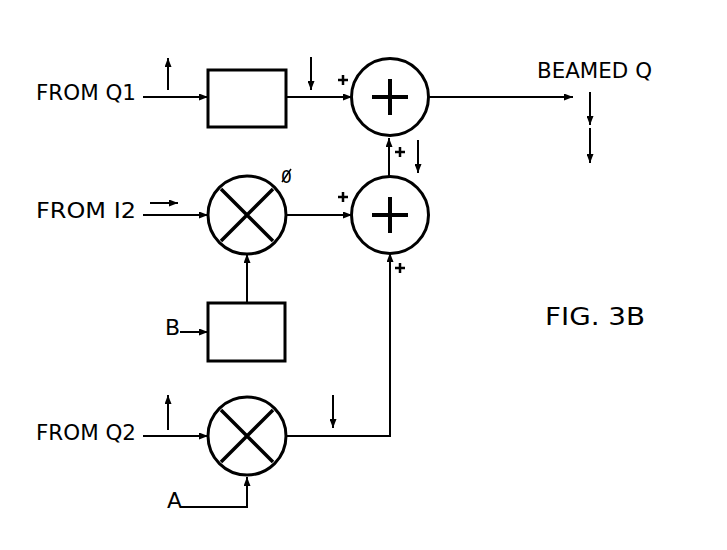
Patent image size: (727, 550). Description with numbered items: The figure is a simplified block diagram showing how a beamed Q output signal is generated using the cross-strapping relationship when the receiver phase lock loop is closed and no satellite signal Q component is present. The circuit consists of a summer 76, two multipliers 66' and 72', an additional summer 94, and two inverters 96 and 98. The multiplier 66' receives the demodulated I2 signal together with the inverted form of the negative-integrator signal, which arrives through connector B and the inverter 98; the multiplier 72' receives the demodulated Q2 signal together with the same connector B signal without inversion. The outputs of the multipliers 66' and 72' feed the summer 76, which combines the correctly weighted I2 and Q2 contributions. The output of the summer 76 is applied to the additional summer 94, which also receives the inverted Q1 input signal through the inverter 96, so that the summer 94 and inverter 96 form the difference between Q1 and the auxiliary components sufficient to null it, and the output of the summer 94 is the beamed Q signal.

The inverter 96 is at (247, 69).
The additional summer 94 is at (390, 69).
The multiplier 66' is at (263, 222).
The summer 76 is at (412, 215).
The inverter 98 is at (269, 332).
The multiplier 72' is at (264, 443).